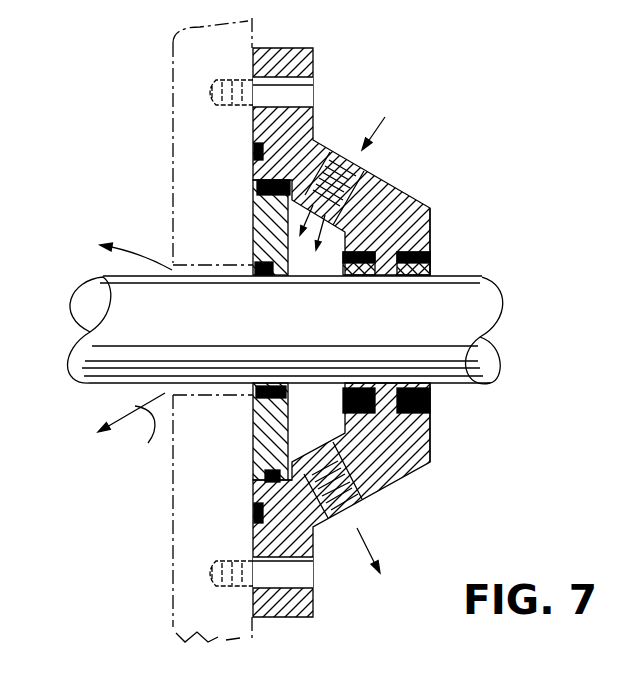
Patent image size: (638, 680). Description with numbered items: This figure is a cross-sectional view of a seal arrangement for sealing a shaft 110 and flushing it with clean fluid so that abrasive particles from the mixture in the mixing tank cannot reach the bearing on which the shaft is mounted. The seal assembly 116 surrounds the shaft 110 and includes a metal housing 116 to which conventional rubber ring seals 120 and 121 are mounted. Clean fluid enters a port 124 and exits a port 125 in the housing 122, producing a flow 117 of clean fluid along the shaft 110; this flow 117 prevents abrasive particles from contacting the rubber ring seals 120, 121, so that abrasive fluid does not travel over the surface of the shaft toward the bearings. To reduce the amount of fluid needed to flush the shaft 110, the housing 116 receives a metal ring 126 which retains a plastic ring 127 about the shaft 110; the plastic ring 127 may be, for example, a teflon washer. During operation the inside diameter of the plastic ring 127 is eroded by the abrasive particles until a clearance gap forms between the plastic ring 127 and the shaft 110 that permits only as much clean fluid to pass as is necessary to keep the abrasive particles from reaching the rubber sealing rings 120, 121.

The shaft 110 is at (126, 367).
The seal assembly 116 is at (422, 192).
The flow of clean fluid 117 is at (129, 435).
The rubber ring seal 120 is at (373, 414).
The rubber ring seal 121 is at (431, 400).
The housing 122 is at (432, 240).
The port 124 is at (358, 166).
The port 125 is at (353, 517).
The metal ring 126 is at (253, 215).
The plastic ring 127 is at (253, 250).